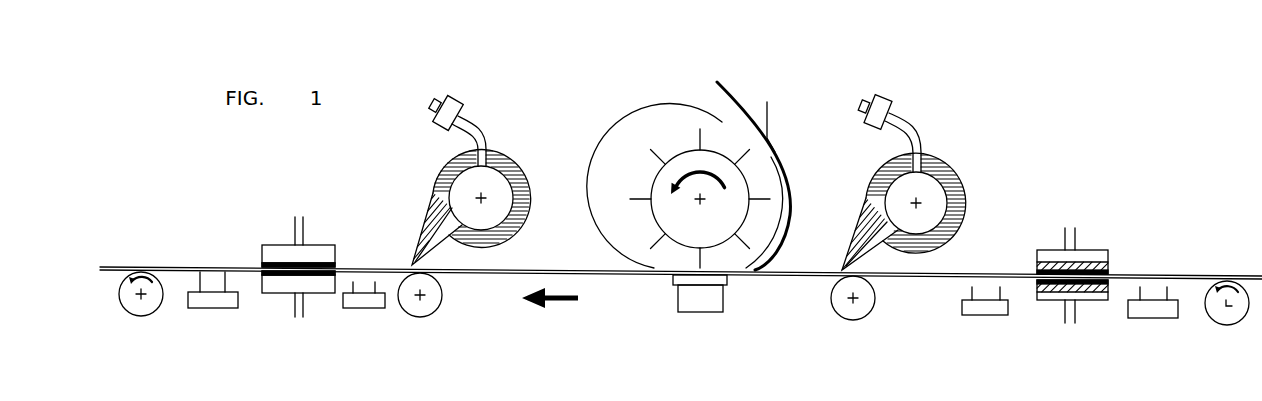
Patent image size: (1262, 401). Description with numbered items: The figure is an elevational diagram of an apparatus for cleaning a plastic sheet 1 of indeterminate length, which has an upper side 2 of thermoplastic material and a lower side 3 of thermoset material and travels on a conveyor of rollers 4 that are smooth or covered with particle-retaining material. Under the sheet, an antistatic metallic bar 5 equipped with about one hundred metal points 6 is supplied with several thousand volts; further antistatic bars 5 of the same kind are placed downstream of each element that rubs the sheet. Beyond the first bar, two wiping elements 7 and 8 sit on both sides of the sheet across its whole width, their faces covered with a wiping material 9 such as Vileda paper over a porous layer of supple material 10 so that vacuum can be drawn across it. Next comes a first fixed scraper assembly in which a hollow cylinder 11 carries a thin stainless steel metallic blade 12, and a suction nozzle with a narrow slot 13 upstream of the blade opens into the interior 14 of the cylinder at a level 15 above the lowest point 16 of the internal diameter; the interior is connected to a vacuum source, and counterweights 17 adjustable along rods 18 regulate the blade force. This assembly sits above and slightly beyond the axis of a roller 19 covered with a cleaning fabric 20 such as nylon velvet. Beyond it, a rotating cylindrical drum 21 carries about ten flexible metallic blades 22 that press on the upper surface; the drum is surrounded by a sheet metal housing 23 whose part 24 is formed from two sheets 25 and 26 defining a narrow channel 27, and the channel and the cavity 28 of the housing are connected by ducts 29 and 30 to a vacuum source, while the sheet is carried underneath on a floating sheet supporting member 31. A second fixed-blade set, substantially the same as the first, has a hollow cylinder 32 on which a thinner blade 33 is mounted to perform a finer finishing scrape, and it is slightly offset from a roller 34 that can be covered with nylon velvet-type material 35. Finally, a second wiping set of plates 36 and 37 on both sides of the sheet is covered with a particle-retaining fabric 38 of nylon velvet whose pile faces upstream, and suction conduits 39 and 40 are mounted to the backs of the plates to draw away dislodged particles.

The plastic sheet 1 is at (469, 272).
The upper side 2 is at (518, 265).
The lower side 3 is at (507, 276).
The rollers 4 is at (132, 300).
The antistatic bar 5 is at (208, 303).
The metal points 6 is at (222, 283).
The wiping element 7 is at (1050, 255).
The wiping element 8 is at (1047, 293).
The heating element 9 is at (1095, 263).
The layer of supple material 10 is at (1082, 258).
The hollow cylinder 11 is at (934, 153).
The metallic blade 12 is at (857, 221).
The narrow slot 13 is at (867, 257).
The interior 14 is at (893, 222).
The level 15 is at (918, 232).
The lowest point 16 is at (953, 203).
The counterweights 17 is at (879, 102).
The rods 18 is at (908, 120).
The roller 19 is at (853, 318).
The cleaning fabric 20 is at (834, 315).
The cylindrical drum 21 is at (663, 210).
The metallic blades 22 is at (640, 192).
The sheet metal housing 23 is at (628, 247).
The part 24 is at (786, 165).
The sheet 25 is at (790, 190).
The sheet 26 is at (787, 228).
The narrow channel 27 is at (774, 160).
The cavity 28 is at (647, 237).
The duct 29 is at (758, 110).
The duct 30 is at (713, 93).
The floating sheet supporting member 31 is at (692, 303).
The applicator housing 32 is at (502, 148).
The blade 33 is at (422, 230).
The roller 34 is at (415, 317).
The nylon velvet-type material 35 is at (433, 316).
The plate 36 is at (270, 248).
The plate 37 is at (270, 283).
The particle-retaining fabric 38 is at (317, 258).
The suction conduit 39 is at (297, 220).
The suction conduit 40 is at (298, 317).